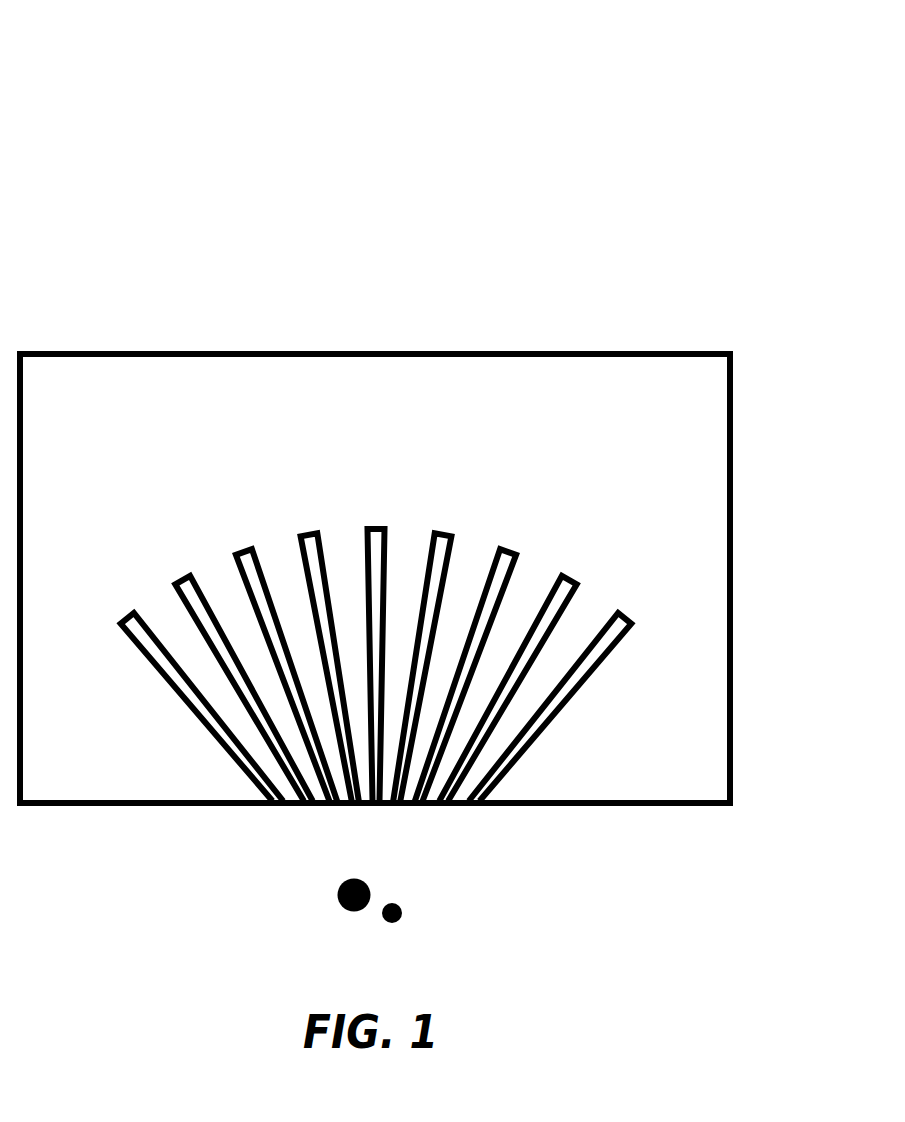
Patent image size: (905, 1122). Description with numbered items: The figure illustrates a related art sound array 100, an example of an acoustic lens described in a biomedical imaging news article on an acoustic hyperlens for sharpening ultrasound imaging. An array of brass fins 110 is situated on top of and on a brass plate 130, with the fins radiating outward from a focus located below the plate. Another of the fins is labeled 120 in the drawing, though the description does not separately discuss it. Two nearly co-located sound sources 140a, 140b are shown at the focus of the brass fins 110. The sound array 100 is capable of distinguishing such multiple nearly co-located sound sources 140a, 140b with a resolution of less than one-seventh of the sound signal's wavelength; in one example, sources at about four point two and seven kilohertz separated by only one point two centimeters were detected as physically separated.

The sound array 100 is at (774, 22).
The brass fins 110 is at (218, 693).
The elongated member 120 is at (585, 660).
The brass plate 130 is at (592, 425).
The sound source 140a is at (349, 910).
The sound source 140b is at (402, 912).